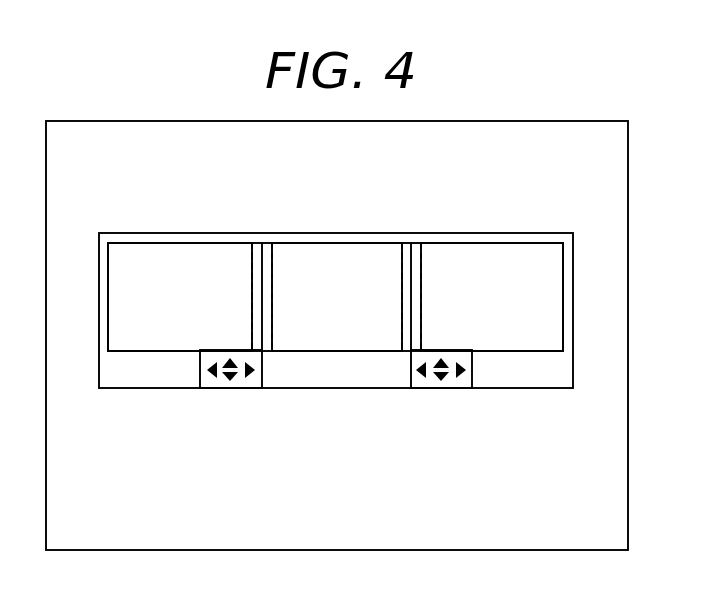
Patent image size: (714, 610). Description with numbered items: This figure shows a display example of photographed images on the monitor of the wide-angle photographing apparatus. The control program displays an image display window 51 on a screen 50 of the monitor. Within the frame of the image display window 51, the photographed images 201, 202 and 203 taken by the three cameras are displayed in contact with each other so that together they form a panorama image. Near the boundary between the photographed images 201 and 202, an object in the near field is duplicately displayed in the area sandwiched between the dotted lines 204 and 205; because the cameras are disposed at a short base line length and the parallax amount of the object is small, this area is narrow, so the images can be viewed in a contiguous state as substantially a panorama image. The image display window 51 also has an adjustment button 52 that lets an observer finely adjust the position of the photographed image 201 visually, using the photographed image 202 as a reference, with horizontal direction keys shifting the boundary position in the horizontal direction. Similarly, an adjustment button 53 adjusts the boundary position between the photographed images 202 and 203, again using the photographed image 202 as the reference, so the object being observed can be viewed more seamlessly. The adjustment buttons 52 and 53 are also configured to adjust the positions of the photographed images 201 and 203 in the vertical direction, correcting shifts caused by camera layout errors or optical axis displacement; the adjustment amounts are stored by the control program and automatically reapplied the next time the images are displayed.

The screen 50 is at (550, 121).
The image display window 51 is at (557, 233).
The adjustment button 52 is at (215, 390).
The adjustment button 53 is at (432, 390).
The photographed image 201 is at (182, 243).
The photographed image 202 is at (330, 243).
The photographed image 203 is at (487, 233).
The dotted line 204 is at (252, 243).
The dotted line 205 is at (273, 243).